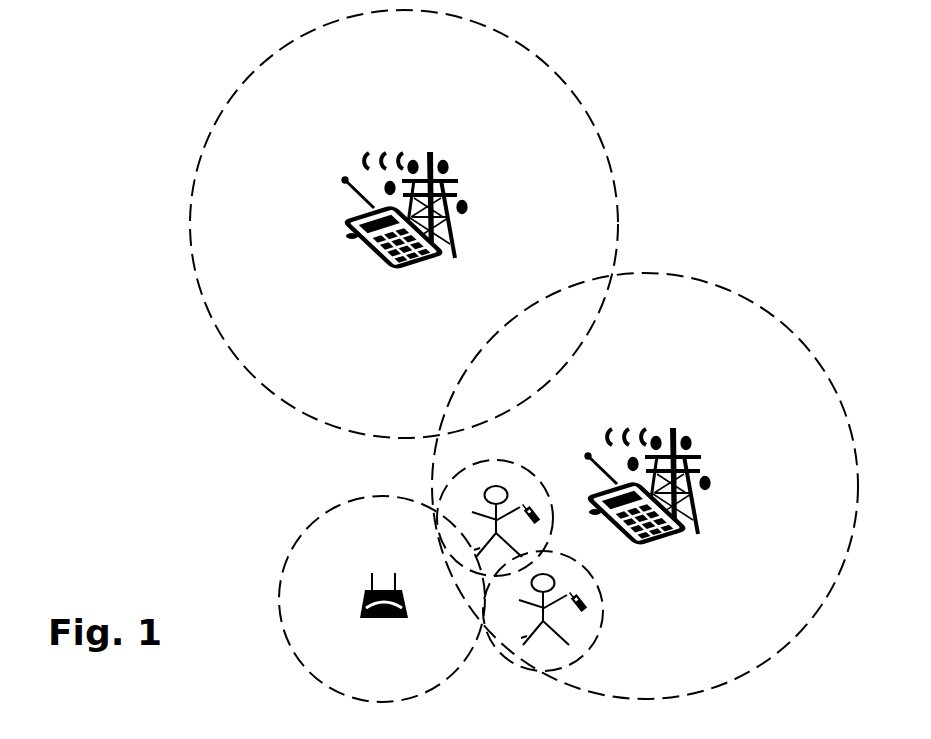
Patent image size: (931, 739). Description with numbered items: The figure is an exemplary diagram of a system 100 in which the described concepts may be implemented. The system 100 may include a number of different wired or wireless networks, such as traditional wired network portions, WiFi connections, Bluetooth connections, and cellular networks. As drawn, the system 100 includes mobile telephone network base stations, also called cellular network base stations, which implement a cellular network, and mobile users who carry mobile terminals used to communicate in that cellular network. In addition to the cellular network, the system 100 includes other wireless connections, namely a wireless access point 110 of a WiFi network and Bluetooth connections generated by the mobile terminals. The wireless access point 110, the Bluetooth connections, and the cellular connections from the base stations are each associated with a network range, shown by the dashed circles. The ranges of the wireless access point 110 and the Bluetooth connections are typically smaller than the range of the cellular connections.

The system 100 is at (58, 79).
The wireless access point 110 is at (320, 520).